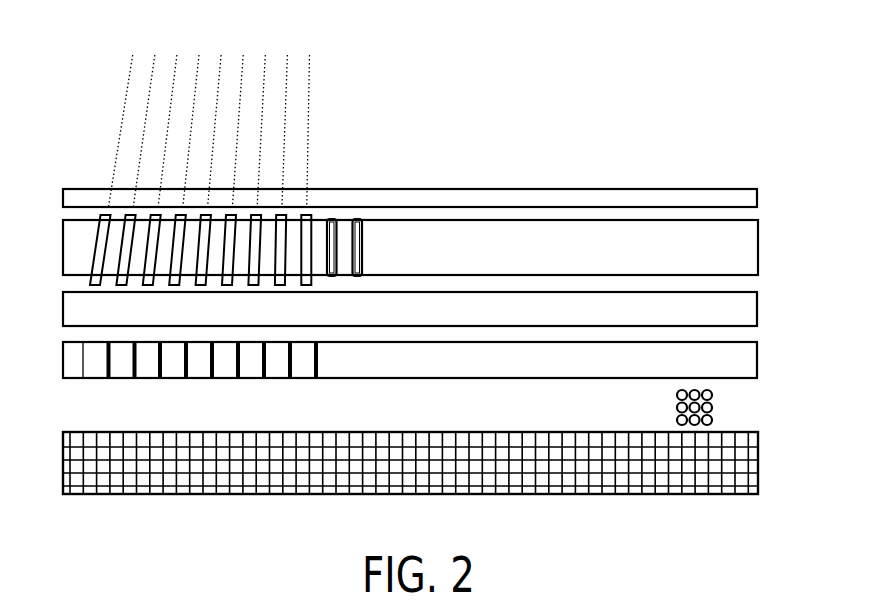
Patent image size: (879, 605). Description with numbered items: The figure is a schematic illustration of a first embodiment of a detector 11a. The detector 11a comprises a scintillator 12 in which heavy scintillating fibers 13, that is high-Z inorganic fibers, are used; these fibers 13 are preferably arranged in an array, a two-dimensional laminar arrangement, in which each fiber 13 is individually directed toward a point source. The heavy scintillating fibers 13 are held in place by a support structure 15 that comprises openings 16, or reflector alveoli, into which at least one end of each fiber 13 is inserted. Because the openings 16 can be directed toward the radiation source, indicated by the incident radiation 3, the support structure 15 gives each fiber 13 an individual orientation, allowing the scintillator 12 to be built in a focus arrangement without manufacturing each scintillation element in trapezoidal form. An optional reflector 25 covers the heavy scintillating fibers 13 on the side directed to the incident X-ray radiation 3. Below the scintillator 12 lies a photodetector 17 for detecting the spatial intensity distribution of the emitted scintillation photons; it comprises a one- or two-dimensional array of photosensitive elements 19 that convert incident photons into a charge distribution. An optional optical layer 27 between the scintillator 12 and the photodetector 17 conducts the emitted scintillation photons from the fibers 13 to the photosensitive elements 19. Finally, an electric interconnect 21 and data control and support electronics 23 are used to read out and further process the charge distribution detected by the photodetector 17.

The detector 11a is at (79, 98).
The incident radiation 3 is at (307, 148).
The reflector 25 is at (758, 202).
The scintillator 12 is at (769, 251).
The heavy scintillating fibers 13 is at (98, 245).
The support structure 15 is at (487, 245).
The openings 16 is at (358, 240).
The optical layer 27 is at (757, 315).
The photodetector 17 is at (757, 363).
The photosensitive elements 19 is at (100, 362).
The electric interconnect 21 is at (738, 408).
The data control and support electronics 23 is at (758, 466).